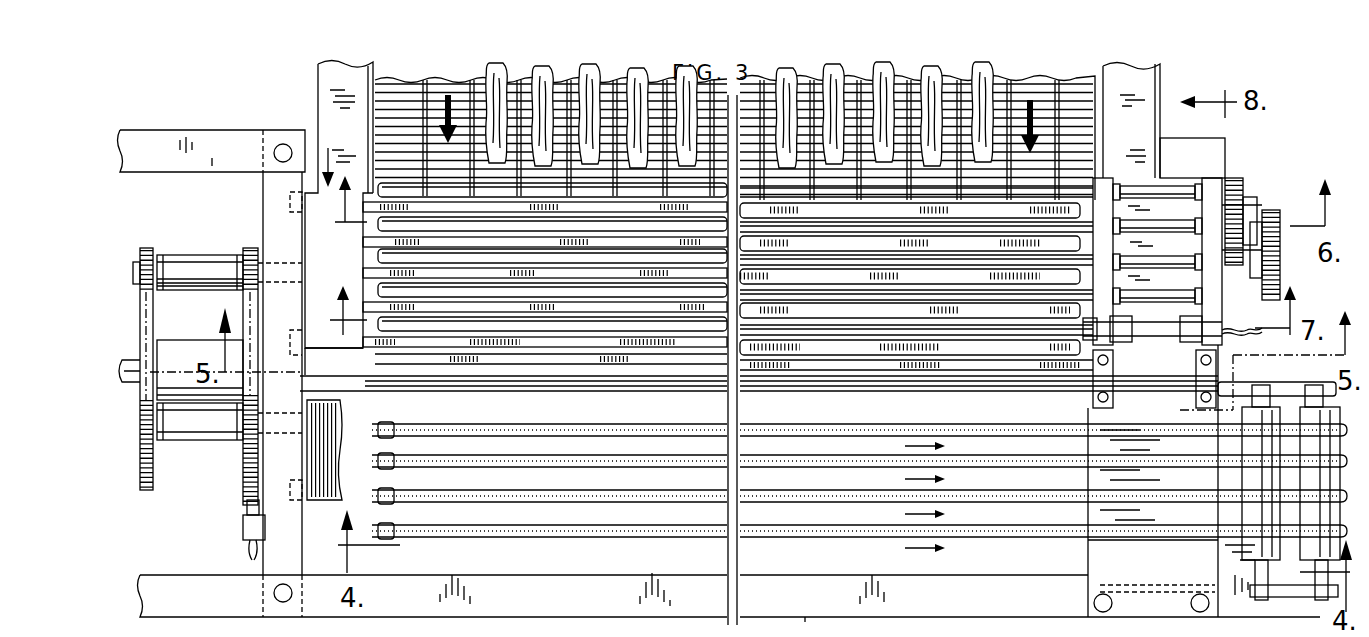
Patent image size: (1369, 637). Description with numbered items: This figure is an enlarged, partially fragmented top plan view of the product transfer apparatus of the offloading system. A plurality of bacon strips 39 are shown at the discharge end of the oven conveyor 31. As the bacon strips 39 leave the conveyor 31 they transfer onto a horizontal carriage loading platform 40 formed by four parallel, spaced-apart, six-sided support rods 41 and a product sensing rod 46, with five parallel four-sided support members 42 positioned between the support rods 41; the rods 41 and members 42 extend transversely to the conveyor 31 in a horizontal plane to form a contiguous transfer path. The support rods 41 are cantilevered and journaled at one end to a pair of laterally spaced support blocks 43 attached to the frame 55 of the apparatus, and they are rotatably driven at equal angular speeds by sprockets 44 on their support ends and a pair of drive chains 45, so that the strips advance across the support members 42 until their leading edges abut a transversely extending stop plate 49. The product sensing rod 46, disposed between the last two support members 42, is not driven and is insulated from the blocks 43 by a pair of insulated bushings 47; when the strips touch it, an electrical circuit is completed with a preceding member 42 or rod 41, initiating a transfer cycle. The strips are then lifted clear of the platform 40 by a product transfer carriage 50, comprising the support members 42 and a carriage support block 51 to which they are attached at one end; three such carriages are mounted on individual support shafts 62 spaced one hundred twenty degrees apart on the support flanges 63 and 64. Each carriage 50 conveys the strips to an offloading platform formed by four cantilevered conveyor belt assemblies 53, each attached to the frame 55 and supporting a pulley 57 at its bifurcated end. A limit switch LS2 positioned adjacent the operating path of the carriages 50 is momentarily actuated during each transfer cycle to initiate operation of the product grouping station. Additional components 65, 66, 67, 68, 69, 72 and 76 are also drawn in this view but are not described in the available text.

The oven conveyor 31 is at (1080, 83).
The bacon strips 39 is at (640, 78).
The carriage loading platform 40 is at (1074, 178).
The support rods 41 is at (442, 247).
The support members 42 is at (410, 243).
The support blocks 43 is at (1108, 190).
The sprockets 44 is at (1260, 213).
The drive chains 45 is at (1172, 192).
The product sensing rod 46 is at (950, 323).
The insulated bushings 47 is at (1185, 337).
The stop plate 49 is at (997, 357).
The product transfer carriage 50 is at (328, 150).
The carriage support block 51 is at (358, 348).
The conveyor belt assemblies 53 is at (626, 418).
The frame 55 is at (207, 140).
The pulley 57 is at (810, 627).
The support shafts 62 is at (266, 272).
The support flange 63 is at (232, 290).
The support flange 64 is at (147, 292).
The rollers 65 is at (180, 260).
The carriage block 66 is at (192, 348).
The stub shaft 67 is at (132, 362).
The bracket 68 is at (290, 206).
The bracket 69 is at (300, 381).
The pivot 72 is at (283, 185).
The shaft 76 is at (518, 380).
The limit switch LS2 is at (243, 527).